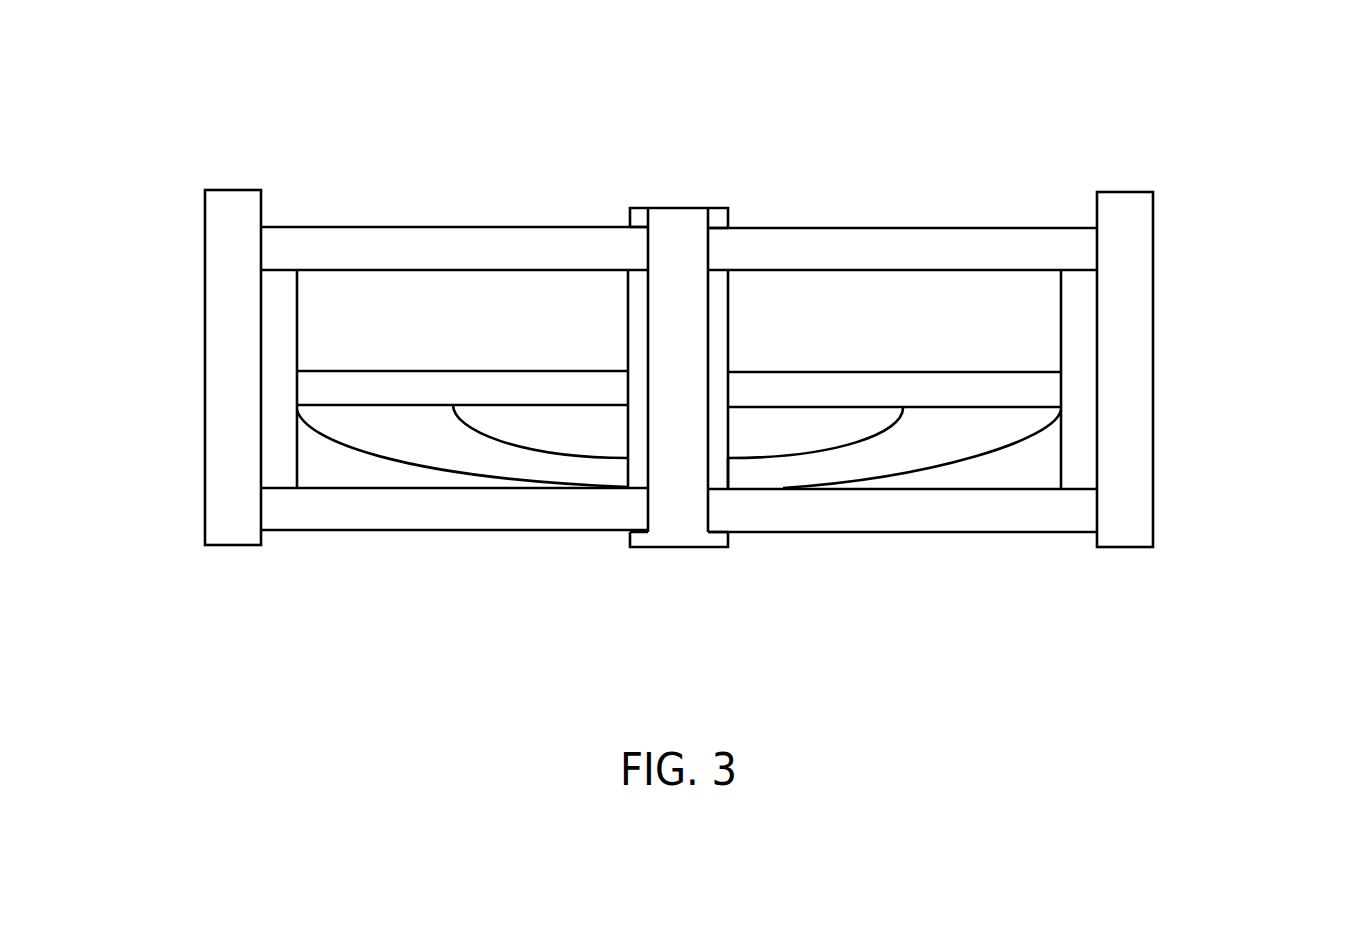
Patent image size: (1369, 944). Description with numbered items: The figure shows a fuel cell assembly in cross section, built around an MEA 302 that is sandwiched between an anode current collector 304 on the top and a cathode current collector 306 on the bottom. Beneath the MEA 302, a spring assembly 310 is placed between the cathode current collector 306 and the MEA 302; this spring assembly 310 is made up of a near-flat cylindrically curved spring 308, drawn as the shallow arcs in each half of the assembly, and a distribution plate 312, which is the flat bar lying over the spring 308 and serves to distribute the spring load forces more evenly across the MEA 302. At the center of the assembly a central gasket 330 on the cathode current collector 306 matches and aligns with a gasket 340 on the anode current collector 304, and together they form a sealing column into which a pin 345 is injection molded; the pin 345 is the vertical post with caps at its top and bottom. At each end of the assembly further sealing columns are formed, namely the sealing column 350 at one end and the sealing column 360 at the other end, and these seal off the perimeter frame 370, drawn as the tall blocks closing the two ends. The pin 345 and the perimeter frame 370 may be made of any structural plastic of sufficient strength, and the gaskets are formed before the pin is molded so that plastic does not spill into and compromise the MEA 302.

The MEA 302 is at (945, 297).
The anode current collector 304 is at (452, 227).
The cathode current collector 306 is at (565, 531).
The near-flat cylindrically curved spring 308 is at (867, 458).
The spring assembly 310 is at (381, 486).
The distribution plate 312 is at (315, 381).
The central gasket 330 is at (730, 468).
The gasket 340 is at (728, 308).
The pin 345 is at (681, 215).
The sealing column 350 is at (293, 305).
The sealing column 360 is at (1061, 352).
The perimeter frame 370 is at (1153, 463).